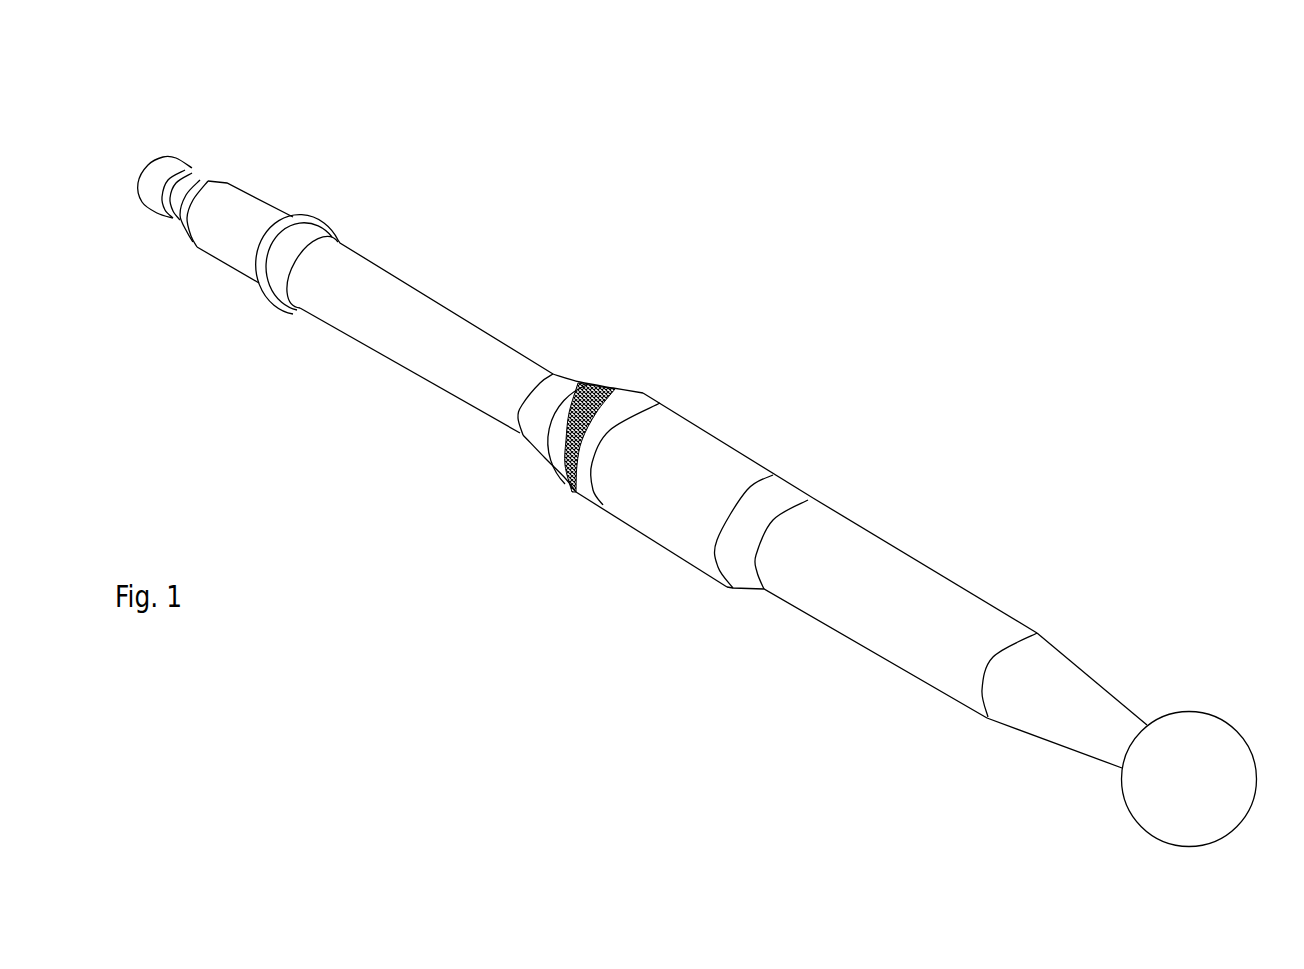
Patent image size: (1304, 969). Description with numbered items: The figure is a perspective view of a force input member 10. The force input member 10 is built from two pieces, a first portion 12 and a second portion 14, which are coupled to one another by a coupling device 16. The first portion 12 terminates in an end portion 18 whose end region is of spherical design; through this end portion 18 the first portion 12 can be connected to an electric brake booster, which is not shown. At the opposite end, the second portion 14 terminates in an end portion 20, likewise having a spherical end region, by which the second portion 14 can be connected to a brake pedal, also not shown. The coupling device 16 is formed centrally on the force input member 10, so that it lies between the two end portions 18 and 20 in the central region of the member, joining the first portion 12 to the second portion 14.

The force input member 10 is at (913, 193).
The first portion 12 is at (500, 200).
The second portion 14 is at (994, 488).
The coupling device 16 is at (759, 412).
The end portion 18 is at (227, 178).
The end portion 20 is at (1208, 712).